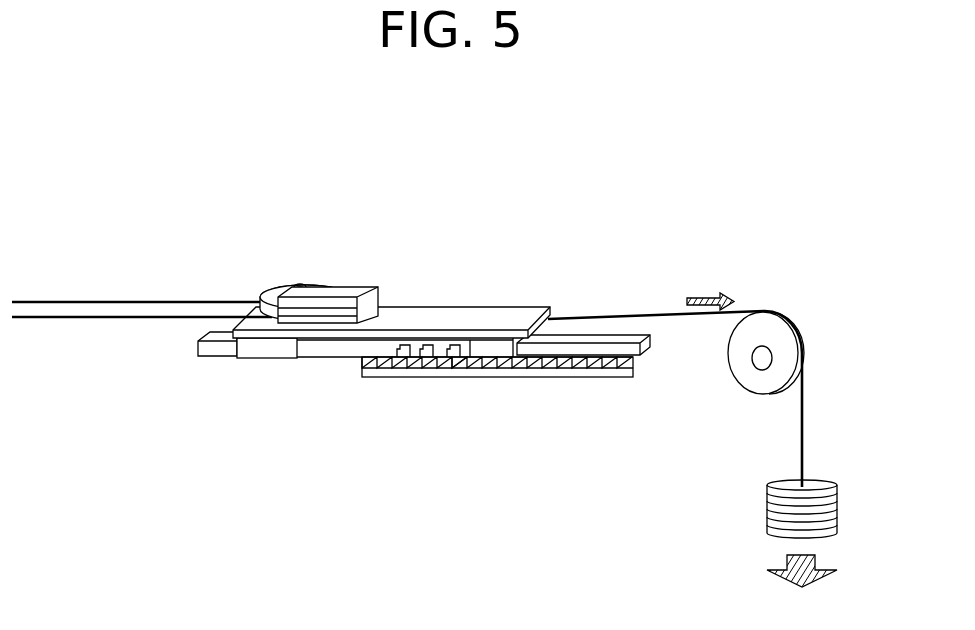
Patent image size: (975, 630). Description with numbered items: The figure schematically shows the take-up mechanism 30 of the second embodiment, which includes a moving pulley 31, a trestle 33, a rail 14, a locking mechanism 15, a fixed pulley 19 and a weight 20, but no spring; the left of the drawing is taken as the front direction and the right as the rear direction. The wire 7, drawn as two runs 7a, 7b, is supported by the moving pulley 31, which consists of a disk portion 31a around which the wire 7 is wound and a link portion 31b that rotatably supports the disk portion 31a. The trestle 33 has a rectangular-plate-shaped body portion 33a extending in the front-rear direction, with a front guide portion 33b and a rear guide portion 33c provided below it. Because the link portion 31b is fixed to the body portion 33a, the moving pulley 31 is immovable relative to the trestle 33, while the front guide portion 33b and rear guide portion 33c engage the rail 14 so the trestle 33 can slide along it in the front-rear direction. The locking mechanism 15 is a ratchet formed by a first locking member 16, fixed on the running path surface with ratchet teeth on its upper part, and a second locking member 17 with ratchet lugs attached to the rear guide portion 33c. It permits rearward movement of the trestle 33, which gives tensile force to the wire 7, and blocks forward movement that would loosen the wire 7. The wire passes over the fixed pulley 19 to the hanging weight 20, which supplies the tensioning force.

The wire 7 is at (142, 314).
The upper wire 7a is at (88, 301).
The lower wire 7b is at (58, 318).
The rail 14 is at (327, 345).
The locking mechanism 15 is at (472, 373).
The first locking member 16 is at (407, 374).
The second locking member 17 is at (395, 345).
The fixed pulley 19 is at (783, 335).
The weight 20 is at (837, 502).
The take-up mechanism 30 is at (533, 248).
The moving pulley 31 is at (326, 236).
The disk portion 31a is at (270, 290).
The link portion 31b is at (356, 286).
The trestle 33 is at (414, 351).
The body portion 33a is at (463, 306).
The front guide portion 33b is at (243, 362).
The rear guide portion 33c is at (512, 358).